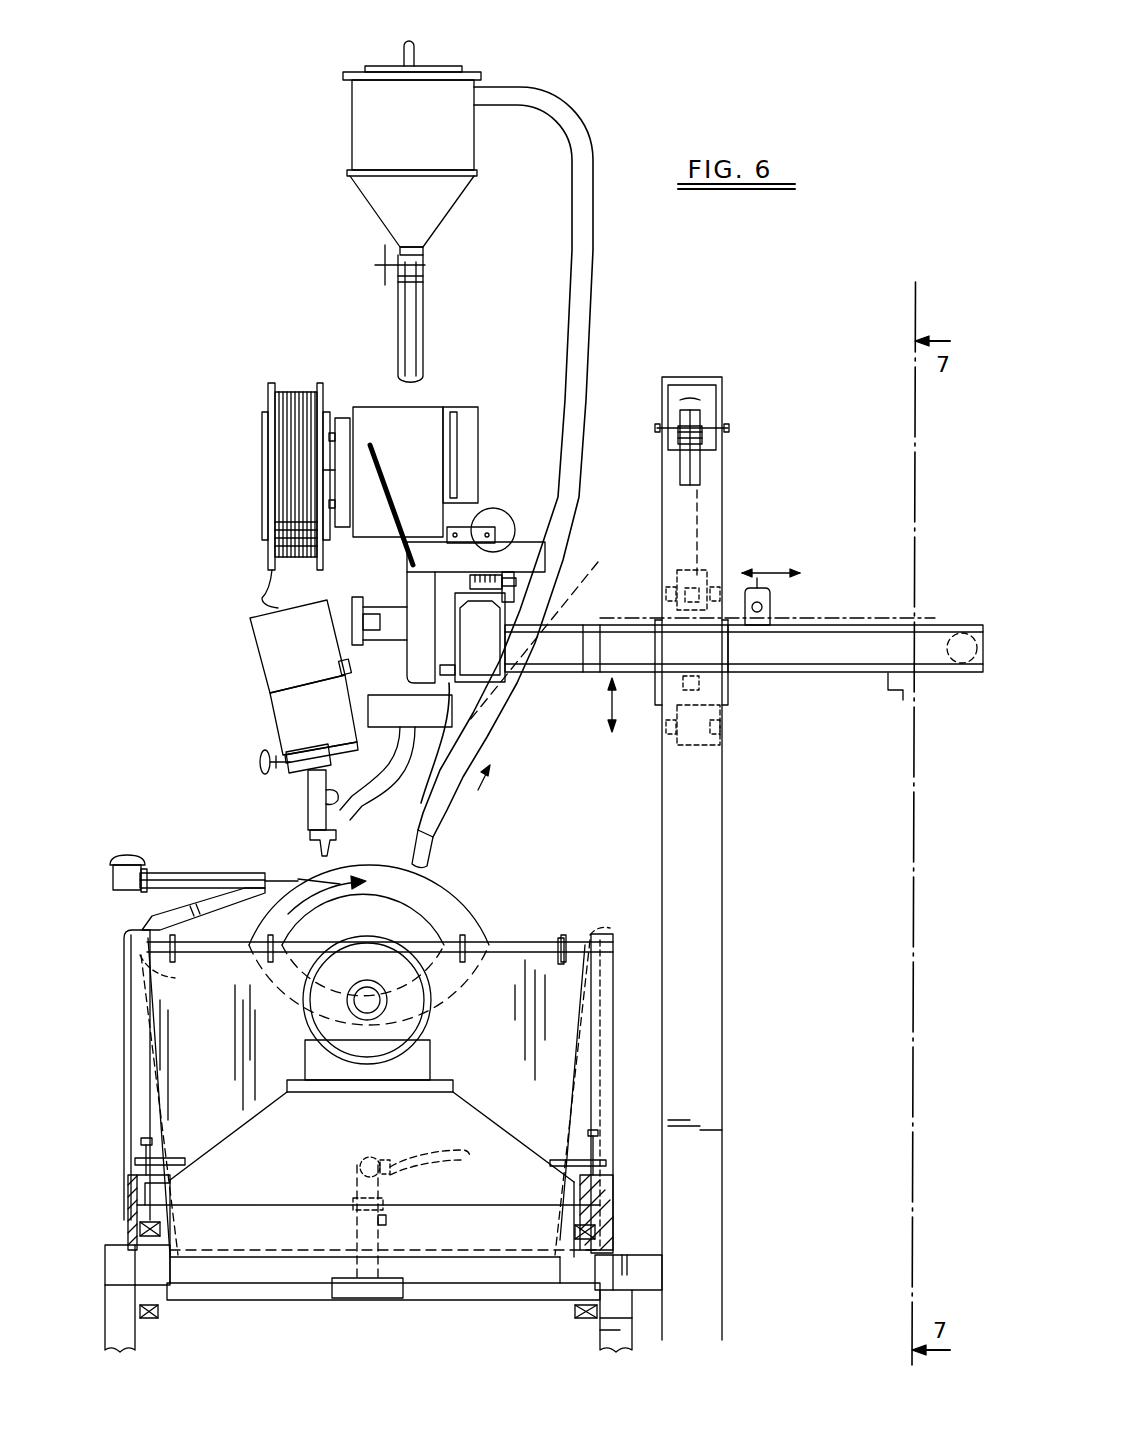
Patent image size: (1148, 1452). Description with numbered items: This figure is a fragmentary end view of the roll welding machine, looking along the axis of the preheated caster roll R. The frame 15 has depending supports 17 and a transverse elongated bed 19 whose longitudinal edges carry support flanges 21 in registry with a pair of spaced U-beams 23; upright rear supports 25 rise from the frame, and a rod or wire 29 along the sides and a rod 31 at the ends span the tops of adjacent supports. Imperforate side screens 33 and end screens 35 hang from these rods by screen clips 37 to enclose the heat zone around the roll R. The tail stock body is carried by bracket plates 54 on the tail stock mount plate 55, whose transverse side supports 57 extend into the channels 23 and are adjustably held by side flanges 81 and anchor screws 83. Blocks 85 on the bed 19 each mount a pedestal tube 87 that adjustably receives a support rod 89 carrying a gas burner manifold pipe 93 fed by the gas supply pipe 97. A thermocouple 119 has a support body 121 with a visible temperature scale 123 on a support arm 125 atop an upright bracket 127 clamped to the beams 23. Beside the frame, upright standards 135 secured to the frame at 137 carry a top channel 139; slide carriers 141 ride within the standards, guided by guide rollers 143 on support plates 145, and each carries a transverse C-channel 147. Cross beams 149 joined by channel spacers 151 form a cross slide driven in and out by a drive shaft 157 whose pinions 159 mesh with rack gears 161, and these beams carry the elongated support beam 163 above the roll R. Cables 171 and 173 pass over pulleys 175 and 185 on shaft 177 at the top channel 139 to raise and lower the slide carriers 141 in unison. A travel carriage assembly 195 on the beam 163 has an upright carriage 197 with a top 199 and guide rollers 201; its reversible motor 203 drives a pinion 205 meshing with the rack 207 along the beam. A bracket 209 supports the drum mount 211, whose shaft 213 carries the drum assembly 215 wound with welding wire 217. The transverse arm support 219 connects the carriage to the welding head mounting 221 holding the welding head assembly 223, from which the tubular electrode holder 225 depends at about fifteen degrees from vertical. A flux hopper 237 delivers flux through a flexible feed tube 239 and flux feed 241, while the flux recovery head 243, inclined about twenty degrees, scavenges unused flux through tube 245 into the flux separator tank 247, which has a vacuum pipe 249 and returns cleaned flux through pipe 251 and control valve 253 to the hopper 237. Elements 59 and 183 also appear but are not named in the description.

The frame 15 is at (150, 1270).
The depending supports 17 is at (130, 1350).
The transverse elongated bed 19 is at (300, 1302).
The elongated support flanges 21 is at (600, 1262).
The U-beams 23 is at (605, 1215).
The upright rear supports 25 is at (604, 1025).
The wire support 29 is at (395, 958).
The wire support 31 is at (502, 890).
The side screens 33 is at (158, 1070).
The end screens 35 is at (512, 960).
The screen clips 37 is at (566, 936).
The bracket plates 54 is at (430, 1055).
The tail stock mount plate 55 is at (225, 1142).
The transverse side supports 57 is at (150, 1195).
The fastener 59 is at (160, 1312).
The side flanges 81 is at (604, 1160).
The adjustable anchor screws 83 is at (596, 1130).
The blocks 85 is at (395, 1300).
The pedestal tube 87 is at (382, 1238).
The support rod 89 is at (382, 1193).
The gas burner manifold pipes 93 is at (358, 1165).
The gas supply pipe 97 is at (462, 1150).
The thermocouple 119 is at (277, 876).
The support body 121 is at (232, 874).
The visible temperature scale 123 is at (128, 854).
The support arm 125 is at (132, 1020).
The upright bracket 127 is at (188, 905).
The standards 135 is at (724, 517).
The securement of standards to frame 137 is at (634, 1318).
The top channel 139 is at (683, 378).
The slide carriers 141 is at (722, 742).
The guide rollers 143 is at (664, 594).
The support plates 145 is at (730, 693).
The transverse C-channel 147 is at (778, 650).
The cross beams 149 is at (940, 628).
The cross beam channel spacers 151 is at (680, 690).
The drive shaft 157 is at (772, 606).
The pinions 159 is at (770, 600).
The rack gears 161 is at (838, 620).
The support beam 163 is at (495, 675).
The cable 171 is at (702, 470).
The cable 173 is at (692, 482).
The pulley 175 is at (704, 416).
The shaft 177 is at (730, 428).
The carriage 183 is at (707, 580).
The pulley 185 is at (680, 400).
The travel carriage assemblies 195 is at (522, 524).
The upright carriage 197 is at (410, 662).
The carriage top 199 is at (540, 558).
The guide rollers 201 is at (528, 578).
The reversible electric motor 203 is at (490, 522).
The pinion 205 is at (476, 557).
The longitudinal rack 207 is at (516, 584).
The bracket 209 is at (390, 480).
The drum mount 211 is at (420, 410).
The shaft 213 is at (333, 475).
The drum assembly 215 is at (268, 396).
The welding wire 217 is at (268, 598).
The transverse arm support 219 is at (375, 603).
The carriage welding head mounting 221 is at (330, 632).
The welding head assembly 223 is at (272, 698).
The tubular electrode holder 225 is at (306, 796).
The flux storage hopper 237 is at (437, 724).
The flexible feed tube 239 is at (388, 770).
The flux feed 241 is at (338, 834).
The flux recovery head 243 is at (432, 862).
The tube 245 is at (592, 248).
The primary flux separator tank 247 is at (352, 130).
The vacuum pipe 249 is at (414, 50).
The pipe 251 is at (417, 334).
The control valve 253 is at (383, 262).
The caster roll R is at (476, 907).